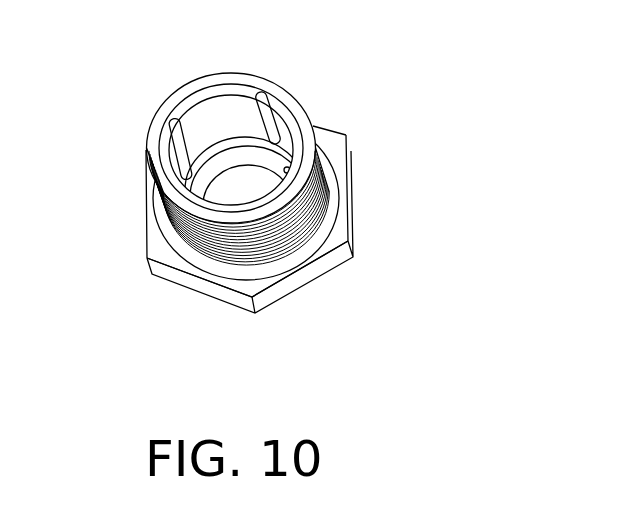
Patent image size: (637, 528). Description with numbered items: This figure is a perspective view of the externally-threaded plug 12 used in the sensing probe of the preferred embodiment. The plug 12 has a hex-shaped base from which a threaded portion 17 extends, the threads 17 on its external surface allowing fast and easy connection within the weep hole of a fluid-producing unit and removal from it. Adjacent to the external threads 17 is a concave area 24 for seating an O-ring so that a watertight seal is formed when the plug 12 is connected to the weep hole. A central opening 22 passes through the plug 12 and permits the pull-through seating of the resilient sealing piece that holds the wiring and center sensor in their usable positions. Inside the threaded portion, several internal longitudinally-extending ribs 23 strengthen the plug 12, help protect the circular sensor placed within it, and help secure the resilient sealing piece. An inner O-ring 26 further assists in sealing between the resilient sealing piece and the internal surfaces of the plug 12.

The plug 12 is at (345, 269).
The threaded portion 17 is at (332, 194).
The central opening 22 is at (196, 196).
The internal longitudinally-extending ribs 23 is at (293, 106).
The concave area 24 is at (174, 285).
The inner O-ring 26 is at (214, 135).